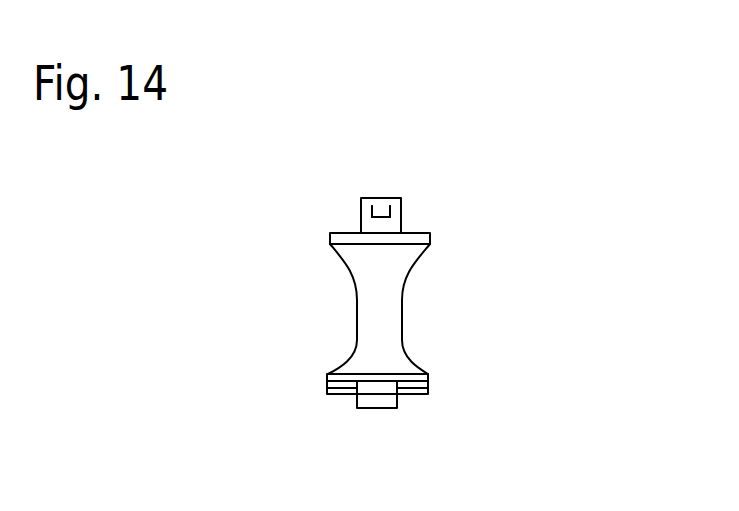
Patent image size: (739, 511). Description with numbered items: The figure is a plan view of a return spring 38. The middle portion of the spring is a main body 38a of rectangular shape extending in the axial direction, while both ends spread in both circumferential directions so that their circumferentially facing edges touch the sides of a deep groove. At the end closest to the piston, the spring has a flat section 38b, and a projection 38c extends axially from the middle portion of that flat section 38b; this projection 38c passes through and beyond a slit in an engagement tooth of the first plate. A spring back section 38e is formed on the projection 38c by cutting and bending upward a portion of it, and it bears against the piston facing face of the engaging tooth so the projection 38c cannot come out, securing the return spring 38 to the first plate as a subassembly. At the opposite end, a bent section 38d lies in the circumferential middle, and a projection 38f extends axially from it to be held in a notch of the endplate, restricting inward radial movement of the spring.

The return spring 38 is at (411, 291).
The main body 38a is at (383, 322).
The flat section 38b is at (343, 248).
The projection 38c is at (395, 205).
The bent section 38d is at (410, 390).
The spring back section 38e is at (375, 207).
The projection 38f is at (380, 400).